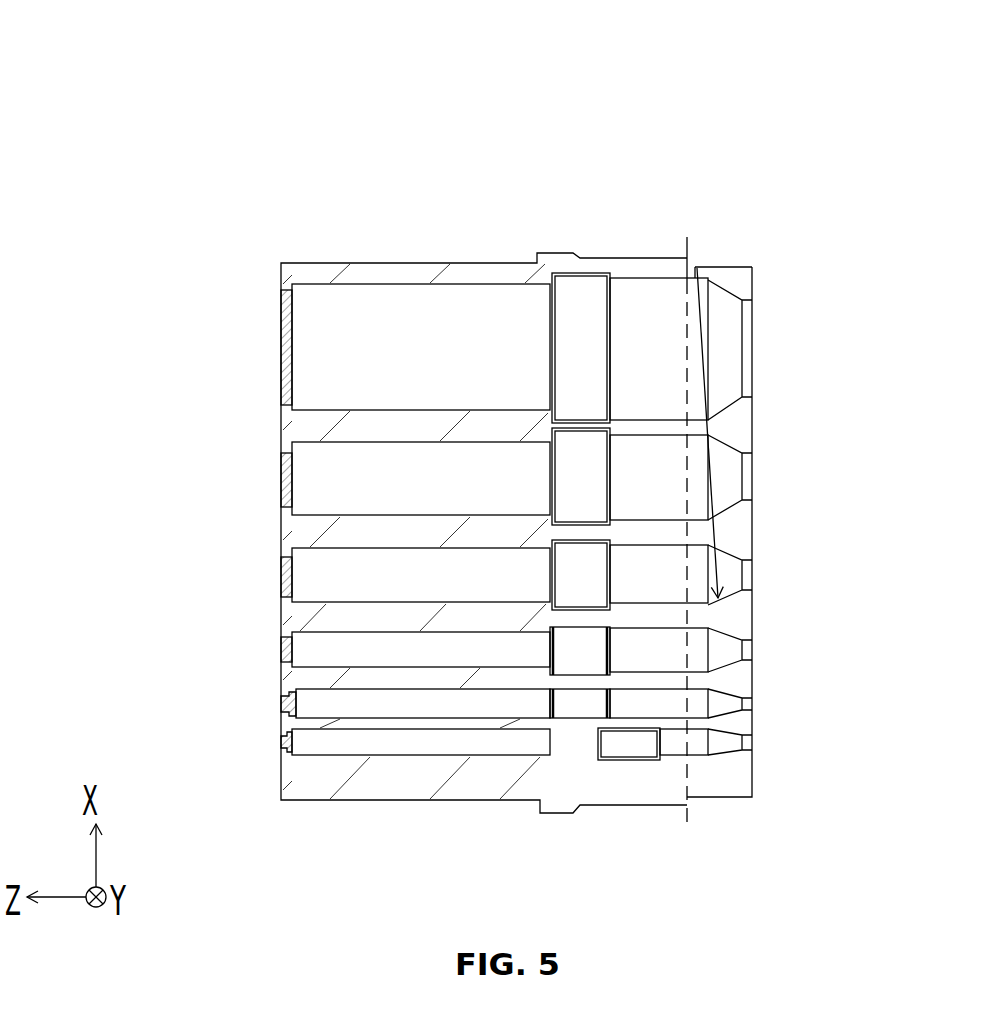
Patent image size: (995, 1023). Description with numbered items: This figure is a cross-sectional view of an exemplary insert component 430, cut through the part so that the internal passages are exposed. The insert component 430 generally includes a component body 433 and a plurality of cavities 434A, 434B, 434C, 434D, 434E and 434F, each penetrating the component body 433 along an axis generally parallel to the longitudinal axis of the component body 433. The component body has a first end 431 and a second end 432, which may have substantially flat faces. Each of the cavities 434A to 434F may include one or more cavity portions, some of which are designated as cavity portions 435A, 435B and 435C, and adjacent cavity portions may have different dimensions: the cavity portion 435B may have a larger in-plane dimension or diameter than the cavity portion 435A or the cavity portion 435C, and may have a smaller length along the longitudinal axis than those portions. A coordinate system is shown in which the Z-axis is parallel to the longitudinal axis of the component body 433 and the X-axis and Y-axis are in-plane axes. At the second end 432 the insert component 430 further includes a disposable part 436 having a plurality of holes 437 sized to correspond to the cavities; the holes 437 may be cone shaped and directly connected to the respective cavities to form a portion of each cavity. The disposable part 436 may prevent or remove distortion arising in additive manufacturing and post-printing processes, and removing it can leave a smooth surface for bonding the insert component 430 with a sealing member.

The insert component 430 is at (512, 57).
The first end 431 is at (279, 270).
The second end 432 is at (756, 773).
The component body 433 is at (383, 772).
The cavity 434A is at (340, 367).
The cavity 434B is at (360, 490).
The cavity 434C is at (340, 575).
The cavity 434D is at (340, 650).
The cavity 434E is at (350, 705).
The cavity 434F is at (350, 745).
The cavity portion 435A is at (394, 574).
The cavity portion 435B is at (584, 577).
The cavity portion 435C is at (638, 567).
The disposable part 436 is at (752, 228).
The holes 437 is at (728, 362).